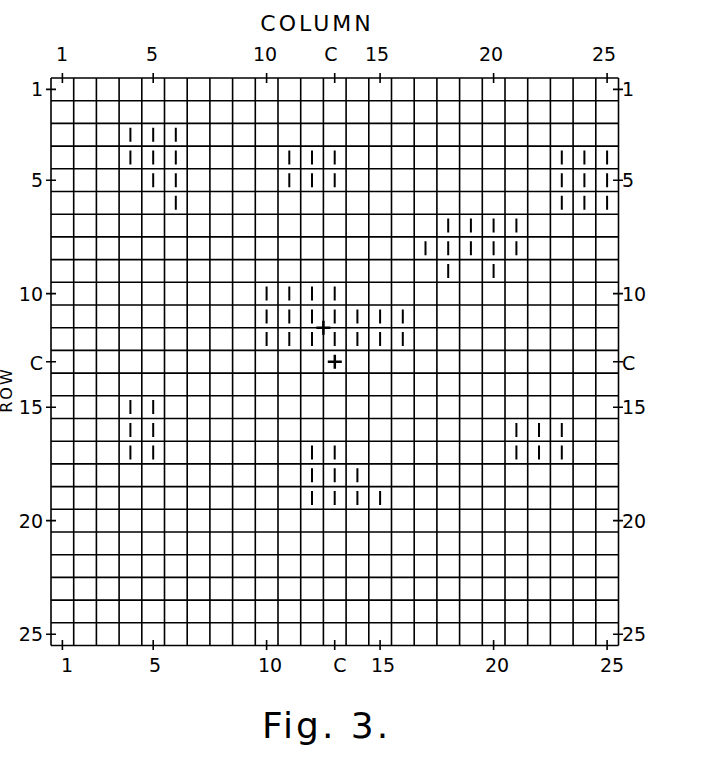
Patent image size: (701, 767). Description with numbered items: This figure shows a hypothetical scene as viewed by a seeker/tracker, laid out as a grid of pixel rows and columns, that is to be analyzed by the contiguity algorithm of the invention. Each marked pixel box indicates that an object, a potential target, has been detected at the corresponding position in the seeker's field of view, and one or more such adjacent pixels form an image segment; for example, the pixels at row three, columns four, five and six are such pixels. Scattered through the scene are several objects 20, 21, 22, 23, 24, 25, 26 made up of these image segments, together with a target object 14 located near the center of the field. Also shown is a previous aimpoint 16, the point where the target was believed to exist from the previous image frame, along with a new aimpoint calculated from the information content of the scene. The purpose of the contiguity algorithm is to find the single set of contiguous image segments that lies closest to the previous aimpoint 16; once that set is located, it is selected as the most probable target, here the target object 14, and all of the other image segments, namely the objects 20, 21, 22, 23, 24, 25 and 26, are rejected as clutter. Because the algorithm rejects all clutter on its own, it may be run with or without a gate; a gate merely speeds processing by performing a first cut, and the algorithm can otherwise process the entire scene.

The target object 14 is at (252, 288).
The previous aimpoint 16 is at (320, 342).
The object 20 is at (183, 117).
The object 21 is at (329, 140).
The object 22 is at (466, 207).
The object 23 is at (121, 421).
The object 24 is at (327, 517).
The object 25 is at (527, 468).
The object 26 is at (585, 137).